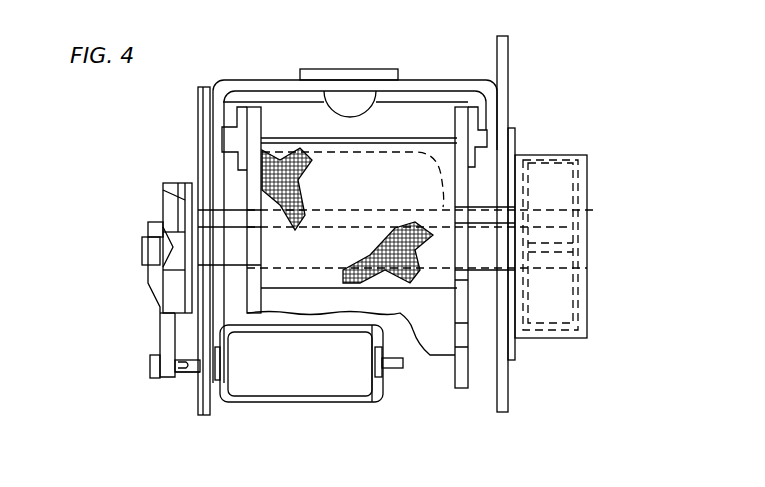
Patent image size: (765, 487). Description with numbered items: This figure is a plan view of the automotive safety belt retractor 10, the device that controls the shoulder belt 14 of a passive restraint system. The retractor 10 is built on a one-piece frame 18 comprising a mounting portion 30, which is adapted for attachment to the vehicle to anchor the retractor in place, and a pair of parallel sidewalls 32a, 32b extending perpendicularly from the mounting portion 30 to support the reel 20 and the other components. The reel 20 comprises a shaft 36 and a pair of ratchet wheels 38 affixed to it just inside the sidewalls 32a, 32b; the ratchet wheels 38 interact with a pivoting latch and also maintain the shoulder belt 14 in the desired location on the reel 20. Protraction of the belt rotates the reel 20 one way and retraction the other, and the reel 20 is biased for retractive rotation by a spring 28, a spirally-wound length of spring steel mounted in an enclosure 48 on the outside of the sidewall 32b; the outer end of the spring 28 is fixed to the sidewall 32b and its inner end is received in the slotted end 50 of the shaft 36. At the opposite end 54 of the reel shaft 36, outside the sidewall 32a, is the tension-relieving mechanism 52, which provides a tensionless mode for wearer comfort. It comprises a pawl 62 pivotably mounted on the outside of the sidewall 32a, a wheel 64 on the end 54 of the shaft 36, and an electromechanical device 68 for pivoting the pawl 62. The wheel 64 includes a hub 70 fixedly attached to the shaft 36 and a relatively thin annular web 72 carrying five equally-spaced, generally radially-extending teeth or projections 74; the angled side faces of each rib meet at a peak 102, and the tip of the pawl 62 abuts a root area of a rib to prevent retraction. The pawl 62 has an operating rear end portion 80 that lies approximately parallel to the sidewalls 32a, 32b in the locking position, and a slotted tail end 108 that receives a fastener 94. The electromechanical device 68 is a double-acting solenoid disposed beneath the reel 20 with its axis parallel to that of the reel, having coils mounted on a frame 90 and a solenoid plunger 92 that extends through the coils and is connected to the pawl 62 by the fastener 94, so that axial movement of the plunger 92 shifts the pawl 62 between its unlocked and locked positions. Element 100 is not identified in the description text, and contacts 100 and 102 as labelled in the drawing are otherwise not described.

The automotive safety belt retractor 10 is at (525, 92).
The shoulder belt 14 is at (442, 358).
The frame 18 is at (533, 127).
The reel 20 is at (463, 396).
The spring 28 is at (552, 157).
The mounting portion 30 is at (420, 78).
The sidewall 32a is at (199, 90).
The sidewall 32b is at (512, 393).
The shaft 36 is at (357, 200).
The ratchet wheels 38 is at (267, 118).
The enclosure 48 is at (587, 268).
The slotted end of shaft 50 is at (557, 222).
The tension-relieving mechanism 52 is at (143, 312).
The opposite end of reel shaft 54 is at (157, 220).
The pawl 62 is at (163, 324).
The wheel 64 is at (143, 295).
The electromechanical device 68 is at (290, 368).
The hub 70 is at (160, 264).
The annular web 72 is at (163, 193).
The teeth or projections 74 is at (168, 182).
The operating rear end portion 80 is at (170, 338).
The frame 90 is at (343, 403).
The solenoid plunger 92 is at (193, 372).
The fastener 94 is at (150, 380).
The contact 100 is at (152, 233).
The peak 102 is at (143, 248).
The tail end 108 is at (172, 380).